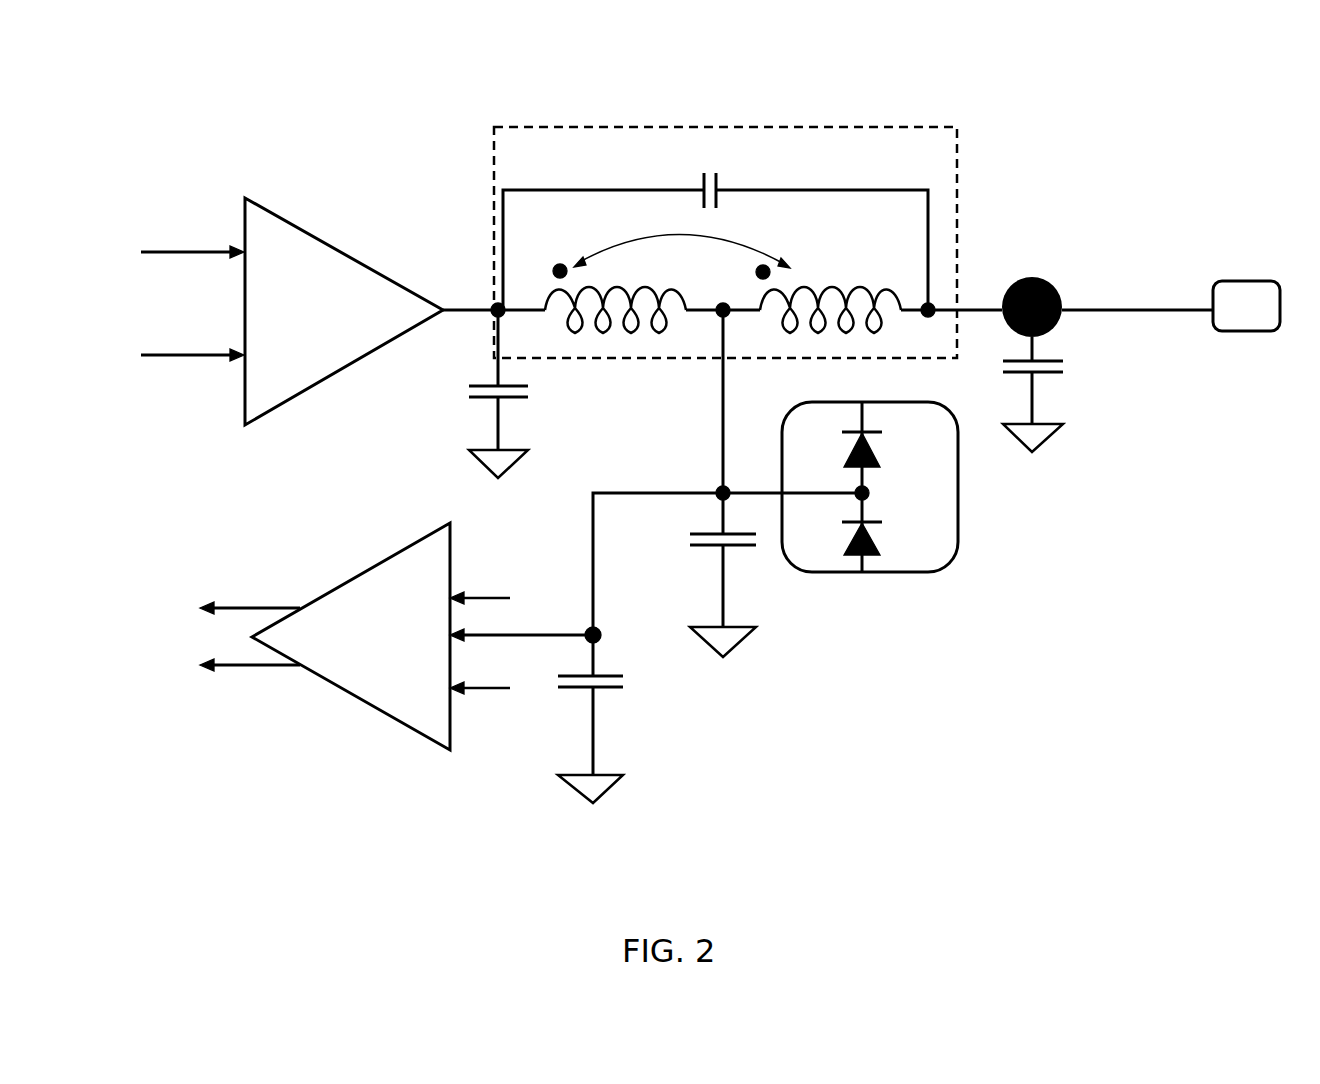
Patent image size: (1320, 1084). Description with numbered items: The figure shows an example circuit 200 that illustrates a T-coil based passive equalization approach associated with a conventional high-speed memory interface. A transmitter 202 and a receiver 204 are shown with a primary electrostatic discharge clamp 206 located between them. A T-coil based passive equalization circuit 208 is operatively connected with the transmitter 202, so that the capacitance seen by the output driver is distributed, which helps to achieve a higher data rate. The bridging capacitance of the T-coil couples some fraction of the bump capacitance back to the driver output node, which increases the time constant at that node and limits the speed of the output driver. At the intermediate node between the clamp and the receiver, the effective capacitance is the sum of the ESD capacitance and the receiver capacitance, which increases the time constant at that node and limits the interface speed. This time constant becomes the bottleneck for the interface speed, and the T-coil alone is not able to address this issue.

The circuit 200 is at (952, 86).
The transmitter 202 is at (281, 311).
The receiver 204 is at (374, 636).
The primary electrostatic discharge (ESD) clamp 206 is at (870, 487).
The T-coil based passive equalization circuit 208 is at (748, 242).